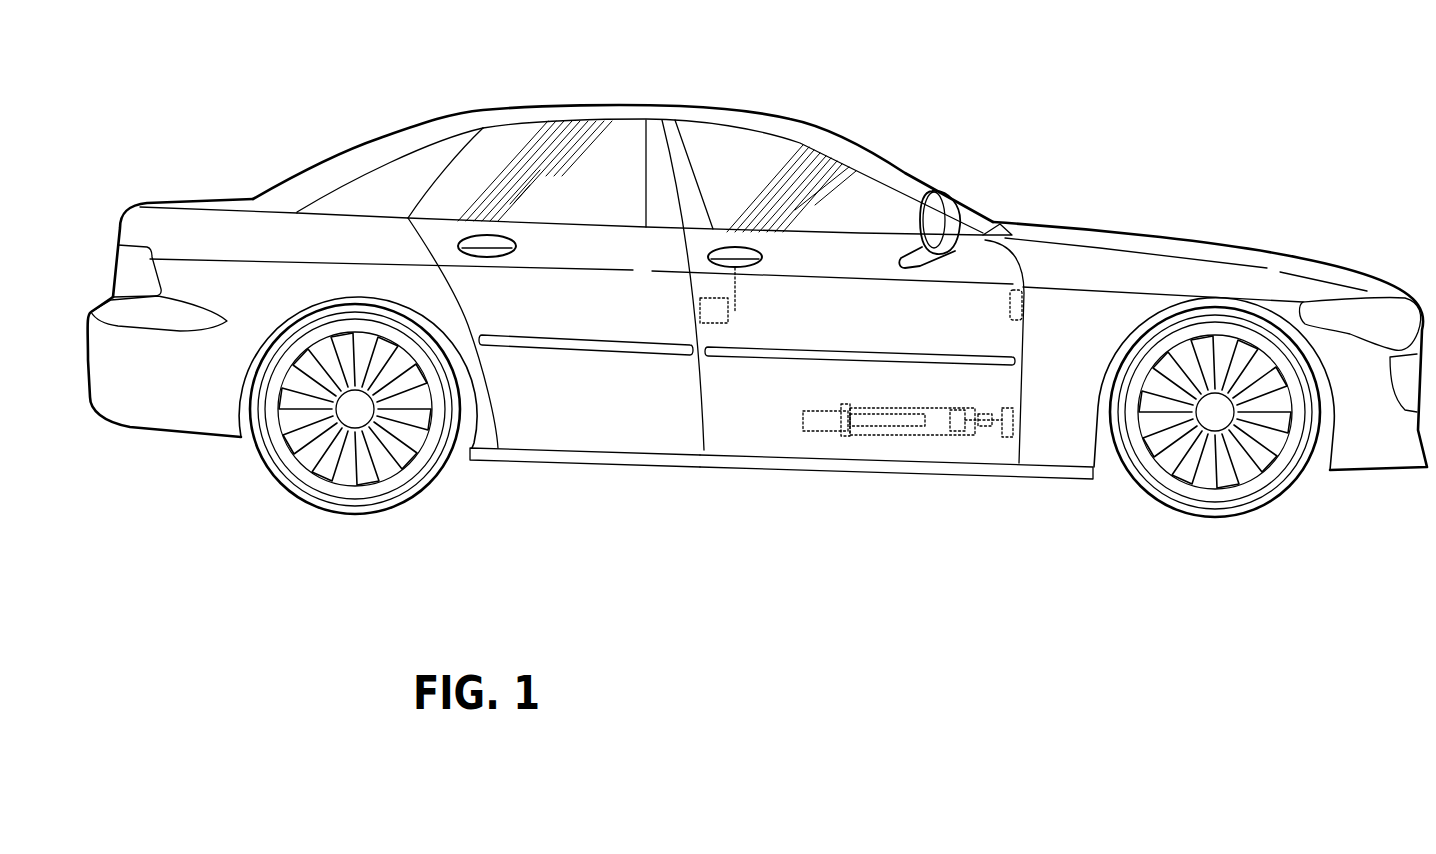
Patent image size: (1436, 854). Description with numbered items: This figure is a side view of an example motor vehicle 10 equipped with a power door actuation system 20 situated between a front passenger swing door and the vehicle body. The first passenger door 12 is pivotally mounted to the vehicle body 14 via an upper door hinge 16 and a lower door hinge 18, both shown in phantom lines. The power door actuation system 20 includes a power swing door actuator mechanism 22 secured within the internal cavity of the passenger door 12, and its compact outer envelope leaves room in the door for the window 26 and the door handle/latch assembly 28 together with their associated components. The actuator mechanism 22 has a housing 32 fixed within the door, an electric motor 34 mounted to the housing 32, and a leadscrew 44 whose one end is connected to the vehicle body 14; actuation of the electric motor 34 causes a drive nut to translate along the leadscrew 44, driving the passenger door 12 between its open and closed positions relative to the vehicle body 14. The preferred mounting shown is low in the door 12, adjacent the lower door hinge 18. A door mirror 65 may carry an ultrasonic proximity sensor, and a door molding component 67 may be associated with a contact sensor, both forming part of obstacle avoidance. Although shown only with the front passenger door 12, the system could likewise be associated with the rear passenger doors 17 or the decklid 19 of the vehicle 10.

The motor vehicle 10 is at (1011, 190).
The first passenger door 12 is at (762, 435).
The vehicle body 14 is at (1049, 257).
The upper door hinge 16 is at (1025, 310).
The rear passenger doors 17 is at (550, 435).
The lower door hinge 18 is at (1013, 423).
The decklid 19 is at (187, 220).
The power door actuation system 20 is at (906, 338).
The power swing door actuator mechanism 22 is at (906, 477).
The window 26 is at (742, 140).
The door handle/latch assembly 28 is at (737, 311).
The housing 32 is at (905, 410).
The electric motor 34 is at (815, 410).
The leadscrew 44 is at (985, 426).
The door mirror 65 is at (950, 200).
The door molding component 67 is at (887, 357).